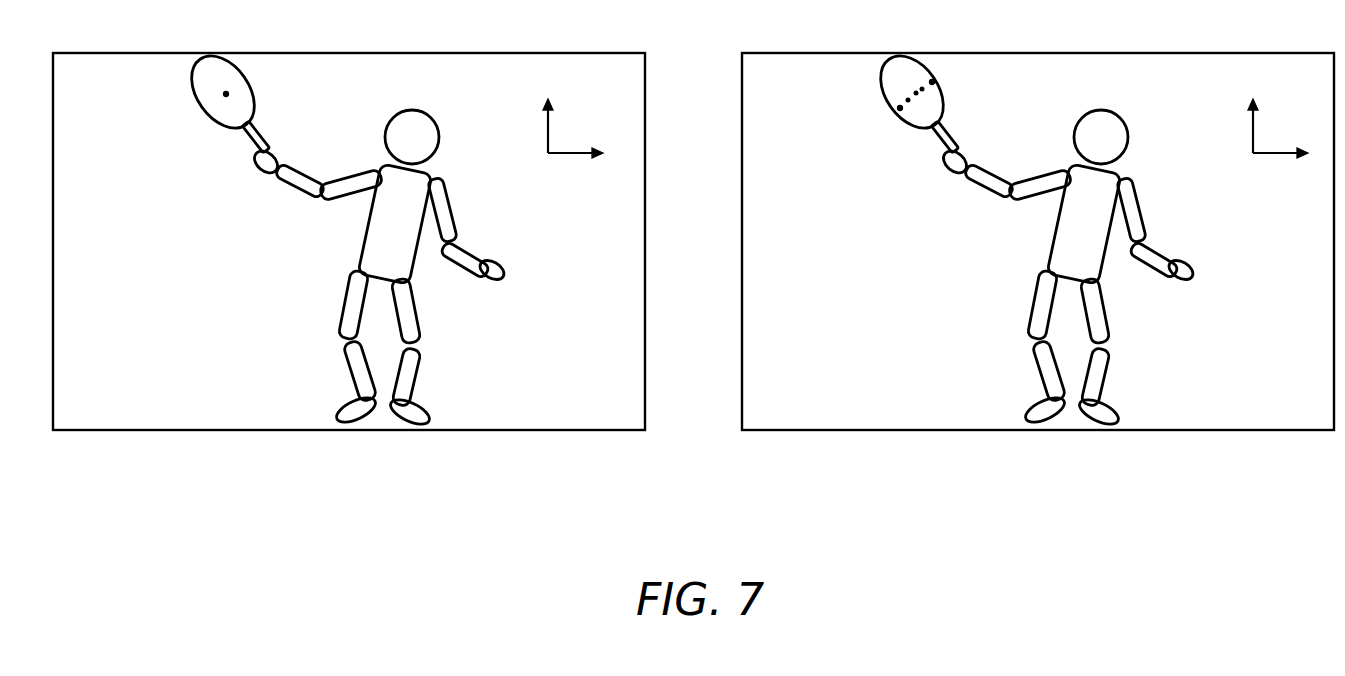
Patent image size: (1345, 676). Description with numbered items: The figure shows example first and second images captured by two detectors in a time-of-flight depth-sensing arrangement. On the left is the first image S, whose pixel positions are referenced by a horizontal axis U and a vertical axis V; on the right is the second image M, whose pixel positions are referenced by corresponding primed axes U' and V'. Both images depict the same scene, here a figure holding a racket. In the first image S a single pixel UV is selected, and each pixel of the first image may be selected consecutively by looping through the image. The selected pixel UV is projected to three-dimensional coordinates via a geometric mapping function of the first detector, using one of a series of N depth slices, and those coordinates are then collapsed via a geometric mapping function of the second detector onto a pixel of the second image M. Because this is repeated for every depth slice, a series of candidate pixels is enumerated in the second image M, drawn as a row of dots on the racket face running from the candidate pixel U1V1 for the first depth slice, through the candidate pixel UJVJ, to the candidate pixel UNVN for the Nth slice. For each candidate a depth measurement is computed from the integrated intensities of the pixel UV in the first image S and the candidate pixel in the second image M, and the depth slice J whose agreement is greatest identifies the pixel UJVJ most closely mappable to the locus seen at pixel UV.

The first image S is at (349, 237).
The second image M is at (1038, 237).
The horizontal pixel coordinate of first image U is at (575, 165).
The vertical pixel coordinate of first image V is at (540, 125).
The horizontal pixel coordinate of second image U' is at (1281, 165).
The vertical pixel coordinate of second image V' is at (1242, 125).
The pixel (U, V) UV is at (226, 100).
The pixel (U'_J, V'_J) UJVJ is at (913, 86).
The pixel (U'_N, V'_N) UNVN is at (939, 80).
The pixel (U'_1, V'_1) U1V1 is at (900, 116).